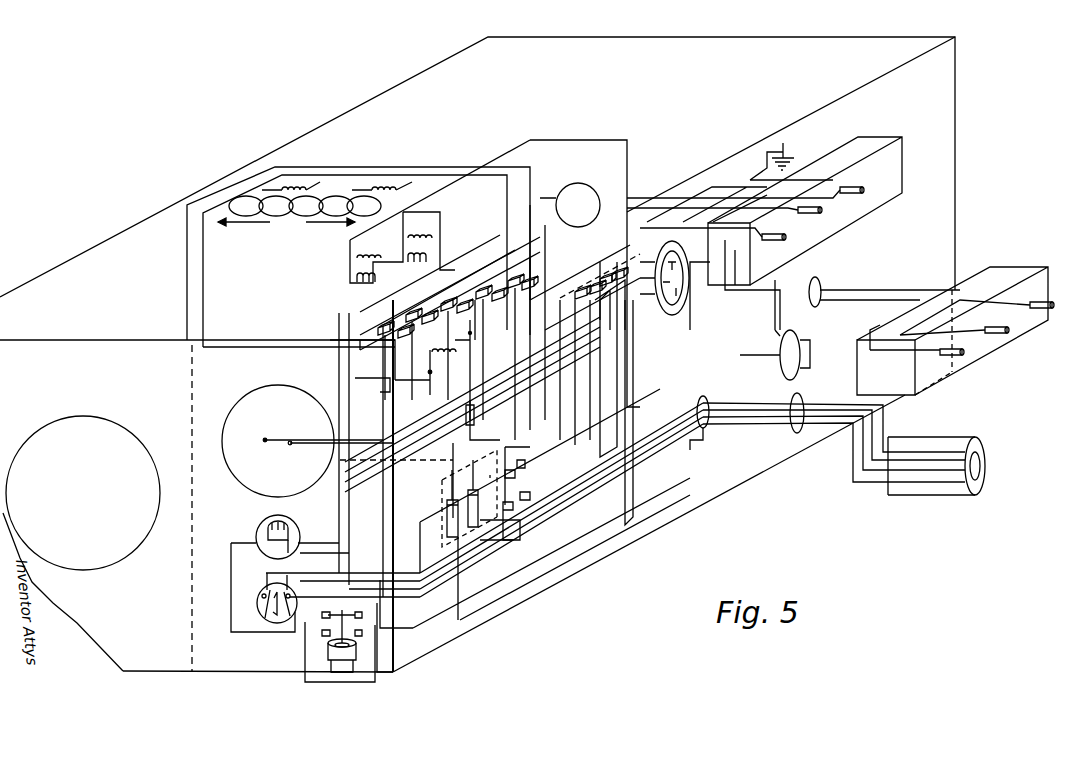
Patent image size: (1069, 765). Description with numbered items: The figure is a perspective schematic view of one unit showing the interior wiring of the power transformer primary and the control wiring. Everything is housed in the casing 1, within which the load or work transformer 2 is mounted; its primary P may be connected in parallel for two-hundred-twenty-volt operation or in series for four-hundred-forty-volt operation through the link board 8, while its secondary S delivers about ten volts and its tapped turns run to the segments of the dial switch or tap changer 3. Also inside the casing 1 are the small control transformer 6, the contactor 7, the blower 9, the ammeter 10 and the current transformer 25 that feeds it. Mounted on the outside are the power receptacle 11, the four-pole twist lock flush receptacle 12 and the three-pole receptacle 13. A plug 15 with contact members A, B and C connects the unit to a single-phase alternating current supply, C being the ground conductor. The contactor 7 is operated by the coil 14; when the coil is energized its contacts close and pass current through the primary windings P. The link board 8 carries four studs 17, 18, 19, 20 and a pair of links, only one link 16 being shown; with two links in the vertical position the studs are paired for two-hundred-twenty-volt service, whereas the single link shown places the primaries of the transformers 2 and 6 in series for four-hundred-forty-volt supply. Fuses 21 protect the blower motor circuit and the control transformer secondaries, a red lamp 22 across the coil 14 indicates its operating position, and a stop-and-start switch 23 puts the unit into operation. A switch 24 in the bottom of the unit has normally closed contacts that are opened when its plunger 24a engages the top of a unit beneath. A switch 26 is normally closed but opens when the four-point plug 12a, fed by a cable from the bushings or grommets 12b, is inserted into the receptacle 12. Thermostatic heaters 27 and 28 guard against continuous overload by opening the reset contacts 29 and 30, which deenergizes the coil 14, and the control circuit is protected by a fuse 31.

The housing or casing 1 is at (400, 97).
The load or work transformer 2 is at (358, 243).
The dial switch or tap changer 3 is at (124, 426).
The control transformer 6 is at (402, 251).
The contactor 7 is at (452, 302).
The link board 8 is at (545, 470).
The blower 9 is at (594, 186).
The ammeter 10 is at (260, 394).
The power receptacle 11 is at (870, 224).
The four-pole twist lock flush receptacle 12 is at (690, 305).
The four-point plug 12a is at (920, 498).
The bushings or grommets 12b is at (711, 427).
The three-pole receptacle 13 is at (770, 352).
The contactor coil 14 is at (428, 358).
The plug 15 is at (990, 360).
The link 16 is at (792, 432).
The stud 17 is at (531, 496).
The stud 18 is at (528, 464).
The stud 19 is at (515, 530).
The stud 20 is at (510, 480).
The fuses 21 is at (445, 500).
The red lamp 22 is at (296, 534).
The stop-and-start switch 23 is at (265, 620).
The switch 24 is at (330, 680).
The plunger 24a is at (352, 680).
The current transformer 25 is at (612, 318).
The switch 26 is at (610, 280).
The thermostatic heater 27 is at (355, 380).
The thermostatic heater 28 is at (560, 298).
The reset contact 29 is at (466, 336).
The reset contact 30 is at (345, 350).
The fuse 31 is at (484, 418).